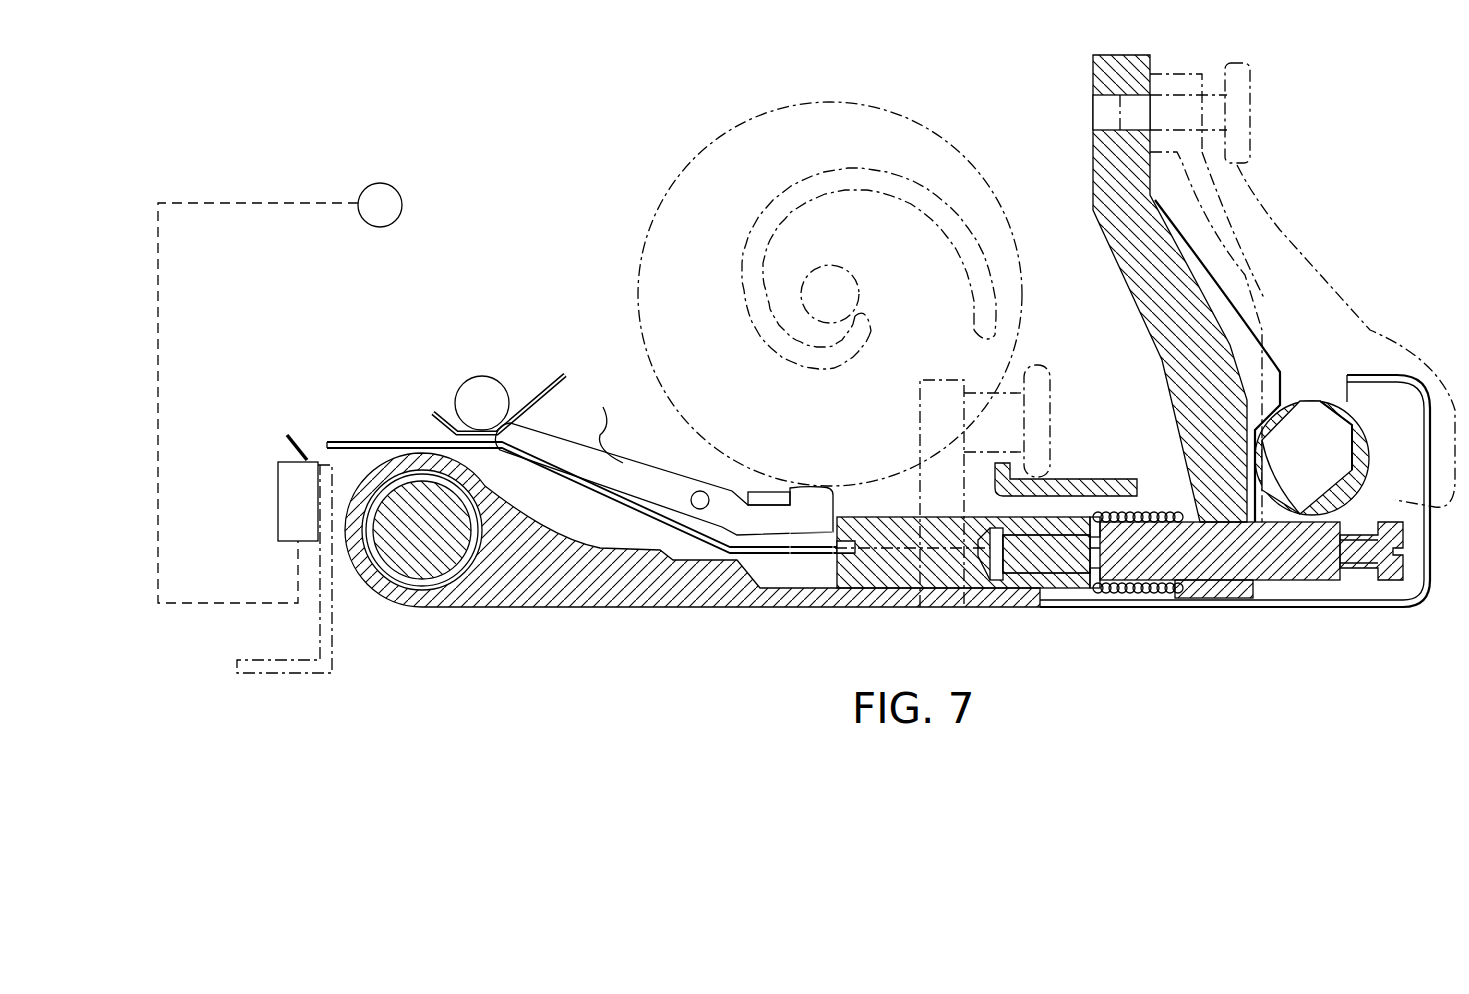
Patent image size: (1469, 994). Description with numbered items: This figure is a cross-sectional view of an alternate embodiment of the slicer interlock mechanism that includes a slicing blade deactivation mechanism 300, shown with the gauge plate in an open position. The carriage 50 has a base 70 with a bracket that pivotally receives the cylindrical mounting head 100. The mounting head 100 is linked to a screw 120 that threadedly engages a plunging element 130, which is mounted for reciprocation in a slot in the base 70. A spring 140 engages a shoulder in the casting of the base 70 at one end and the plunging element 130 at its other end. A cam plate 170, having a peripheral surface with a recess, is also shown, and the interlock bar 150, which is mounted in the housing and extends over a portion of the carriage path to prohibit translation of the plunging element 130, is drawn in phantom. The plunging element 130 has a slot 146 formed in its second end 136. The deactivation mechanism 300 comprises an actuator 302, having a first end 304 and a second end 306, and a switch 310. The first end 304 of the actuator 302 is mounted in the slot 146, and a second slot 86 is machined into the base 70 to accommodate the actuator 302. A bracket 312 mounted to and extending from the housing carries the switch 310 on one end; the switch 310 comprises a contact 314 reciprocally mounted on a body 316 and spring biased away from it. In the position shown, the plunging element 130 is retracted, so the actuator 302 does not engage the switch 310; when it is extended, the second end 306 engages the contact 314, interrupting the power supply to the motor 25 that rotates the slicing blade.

The motor 25 is at (403, 205).
The carriage 50 is at (1350, 248).
The base 70 is at (523, 597).
The second slot 86 is at (687, 560).
The mounting head 100 is at (1306, 362).
The screw 120 is at (1295, 590).
The plunging element 130 is at (993, 590).
The second end 136 is at (823, 577).
The spring 140 is at (1125, 594).
The slot 146 is at (863, 590).
The interlock bar 150 is at (742, 610).
The cam plate 170 is at (800, 130).
The slicing blade deactivation mechanism 300 is at (388, 412).
The actuator 302 is at (622, 500).
The first end 304 is at (887, 575).
The second end 306 is at (327, 440).
The switch 310 is at (258, 493).
The bracket 312 is at (338, 628).
The contact 314 is at (287, 432).
The body 316 is at (278, 512).